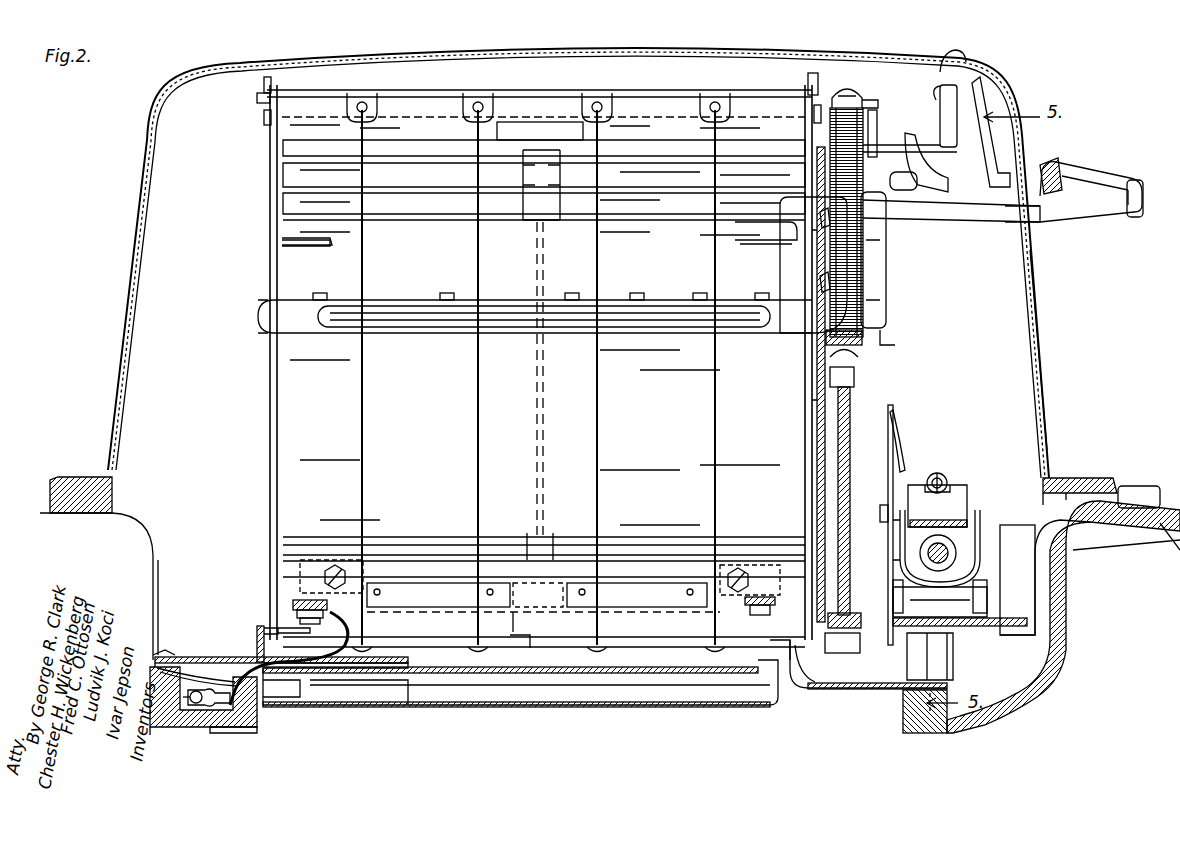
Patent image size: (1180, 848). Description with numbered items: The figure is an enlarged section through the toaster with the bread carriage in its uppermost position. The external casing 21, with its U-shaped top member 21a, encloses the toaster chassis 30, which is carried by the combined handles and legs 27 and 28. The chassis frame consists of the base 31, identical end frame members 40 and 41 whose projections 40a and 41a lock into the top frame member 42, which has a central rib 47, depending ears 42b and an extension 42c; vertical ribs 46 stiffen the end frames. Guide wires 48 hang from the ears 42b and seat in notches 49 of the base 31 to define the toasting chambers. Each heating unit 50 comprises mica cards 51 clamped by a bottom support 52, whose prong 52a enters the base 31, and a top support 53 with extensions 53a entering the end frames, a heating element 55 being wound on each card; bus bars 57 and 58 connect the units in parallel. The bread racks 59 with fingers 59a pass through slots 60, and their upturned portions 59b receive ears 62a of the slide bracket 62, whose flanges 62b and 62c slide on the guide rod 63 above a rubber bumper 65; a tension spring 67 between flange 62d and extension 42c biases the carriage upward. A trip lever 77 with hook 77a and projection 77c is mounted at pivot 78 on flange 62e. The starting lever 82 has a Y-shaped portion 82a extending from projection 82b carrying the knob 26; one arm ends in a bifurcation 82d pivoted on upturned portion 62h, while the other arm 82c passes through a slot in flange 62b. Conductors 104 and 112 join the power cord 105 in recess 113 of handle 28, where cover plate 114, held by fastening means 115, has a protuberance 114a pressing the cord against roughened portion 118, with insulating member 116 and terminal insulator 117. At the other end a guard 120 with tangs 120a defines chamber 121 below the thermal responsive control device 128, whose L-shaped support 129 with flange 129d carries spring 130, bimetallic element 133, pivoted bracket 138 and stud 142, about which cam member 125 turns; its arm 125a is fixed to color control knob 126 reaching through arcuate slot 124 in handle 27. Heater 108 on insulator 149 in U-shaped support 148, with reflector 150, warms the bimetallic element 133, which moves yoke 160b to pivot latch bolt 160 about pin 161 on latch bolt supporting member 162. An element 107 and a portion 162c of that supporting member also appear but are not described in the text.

The external casing 21 is at (1049, 283).
The U-shaped top member 21a is at (1040, 370).
The manually actuatable knob 26 is at (1108, 182).
The combined handle and leg 27 is at (1085, 478).
The combined handle and leg 28 is at (80, 477).
The toaster chassis 30 is at (265, 258).
The base 31 is at (260, 627).
The end frame member 40 is at (268, 378).
The projection 40a is at (265, 84).
The end frame member 41 is at (816, 403).
The projection 41a is at (810, 75).
The top frame member 42 is at (289, 90).
The depending ears 42b is at (585, 102).
The extension 42c is at (863, 100).
The vertical ribs 46 is at (815, 380).
The central rib 47 is at (476, 92).
The guide wires 48 is at (440, 430).
The notches 49 is at (468, 650).
The heating unit 50 is at (305, 410).
The mica cards 51 is at (440, 278).
The bottom supporting member 52 is at (430, 600).
The tongue or prong 52a is at (510, 636).
The top supporting member 53 is at (390, 92).
The extensions 53a is at (266, 115).
The heating element 55 is at (393, 220).
The bus bar 57 is at (300, 603).
The bus bar 58 is at (782, 600).
The bread rack 59 is at (428, 326).
The laterally extending fingers 59a is at (632, 302).
The upwardly directed portion 59b is at (795, 258).
The vertical slot 60 is at (268, 346).
The slide bracket 62 is at (828, 170).
The ears 62a is at (786, 233).
The upper lateral flange 62b is at (874, 140).
The lower lateral flange 62c is at (856, 374).
The flange 62d is at (868, 340).
The vertically disposed lateral flange 62e is at (888, 262).
The upwardly directed portion 62h is at (968, 92).
The guide rod 63 is at (840, 430).
The rubber bumper 65 is at (832, 614).
The coiled tension spring 67 is at (865, 100).
The trip lever 77 is at (885, 213).
The hook portion 77a is at (885, 350).
The projection 77c is at (866, 178).
The pivot 78 is at (885, 282).
The starting lever 82 is at (952, 206).
The Y-shaped portion 82a is at (968, 148).
The projection 82b is at (1010, 212).
The arm 82c is at (916, 133).
The bifurcation 82d is at (955, 62).
The conductor 104 is at (560, 675).
The power cord 105 is at (198, 668).
The switch block 107 is at (836, 633).
The heater 108 is at (975, 580).
The conductor 112 is at (282, 697).
The recess 113 is at (222, 720).
The cover plate 114 is at (200, 658).
The protuberance 114a is at (158, 728).
The fastening means 115 is at (164, 656).
The insulating member 116 is at (228, 661).
The terminal insulator 117 is at (240, 718).
The roughened portion 118 is at (200, 708).
The guard 120 is at (880, 692).
The tang members 120a is at (775, 640).
The chamber 121 is at (865, 690).
The arcuate slot 124 is at (1100, 520).
The cam member 125 is at (1036, 625).
The arm 125a is at (1036, 553).
The color control knob 126 is at (1140, 486).
The thermal responsive control device 128 is at (1015, 490).
The L-shaped support 129 is at (988, 628).
The flange 129d is at (982, 610).
The spring 130 is at (948, 478).
The bimetallic element 133 is at (963, 512).
The L-shaped bracket 138 is at (955, 672).
The stud 142 is at (908, 660).
The U-shaped support 148 is at (978, 594).
The insulator 149 is at (952, 548).
The troughlike reflector 150 is at (980, 515).
The latch bolt member 160 is at (878, 522).
The yoke 160b is at (885, 508).
The pin 161 is at (872, 512).
The latch bolt supporting member 162 is at (895, 413).
The blade spring 162c is at (905, 463).